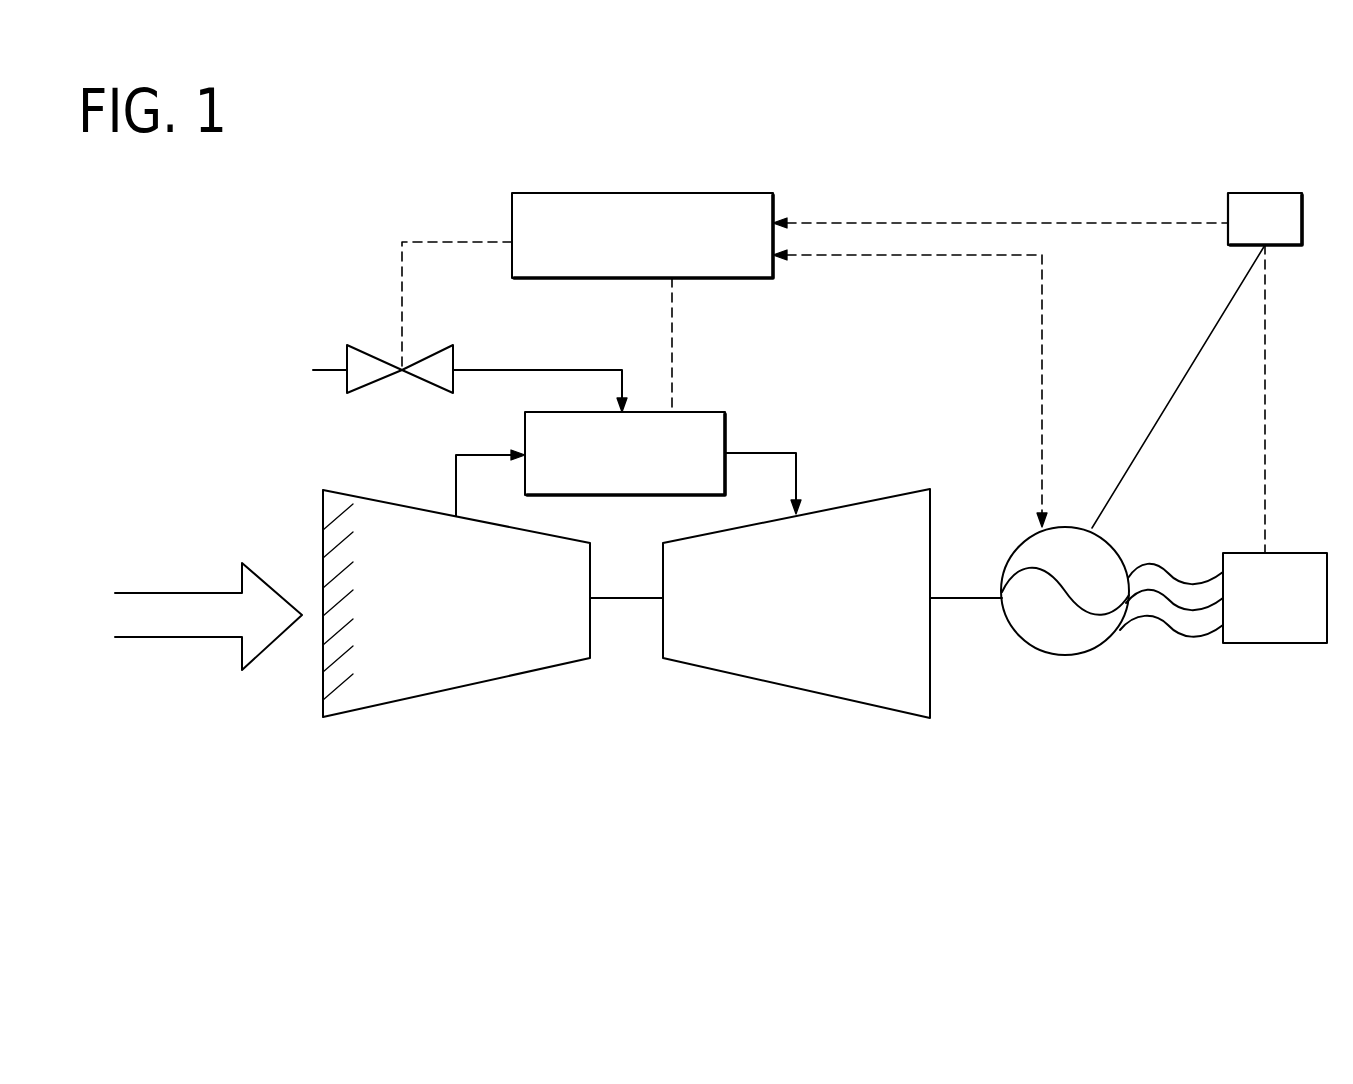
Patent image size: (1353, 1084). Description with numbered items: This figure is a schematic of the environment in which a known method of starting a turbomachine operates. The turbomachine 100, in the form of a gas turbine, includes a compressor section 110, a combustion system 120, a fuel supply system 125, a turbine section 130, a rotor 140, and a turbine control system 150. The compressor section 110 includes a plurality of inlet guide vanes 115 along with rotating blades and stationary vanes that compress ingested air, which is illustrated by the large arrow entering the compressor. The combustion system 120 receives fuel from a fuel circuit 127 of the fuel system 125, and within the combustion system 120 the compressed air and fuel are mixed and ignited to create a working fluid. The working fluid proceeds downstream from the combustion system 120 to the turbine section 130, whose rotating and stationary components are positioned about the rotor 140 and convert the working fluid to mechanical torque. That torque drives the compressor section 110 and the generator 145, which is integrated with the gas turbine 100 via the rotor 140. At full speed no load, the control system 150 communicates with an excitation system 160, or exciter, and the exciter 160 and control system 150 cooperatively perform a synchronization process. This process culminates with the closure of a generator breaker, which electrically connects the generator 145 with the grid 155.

The turbomachine 100 is at (193, 808).
The compressor section 110 is at (419, 617).
The inlet guide vanes 115 is at (323, 722).
The combustion system 120 is at (600, 470).
The fuel supply system 125 is at (320, 310).
The fuel circuit 127 is at (368, 293).
The turbine section 130 is at (767, 614).
The rotor 140 is at (622, 598).
The generator 145 is at (1061, 584).
The turbine control system 150 is at (636, 253).
The grid 155 is at (1247, 612).
The excitation system 160 is at (1238, 235).